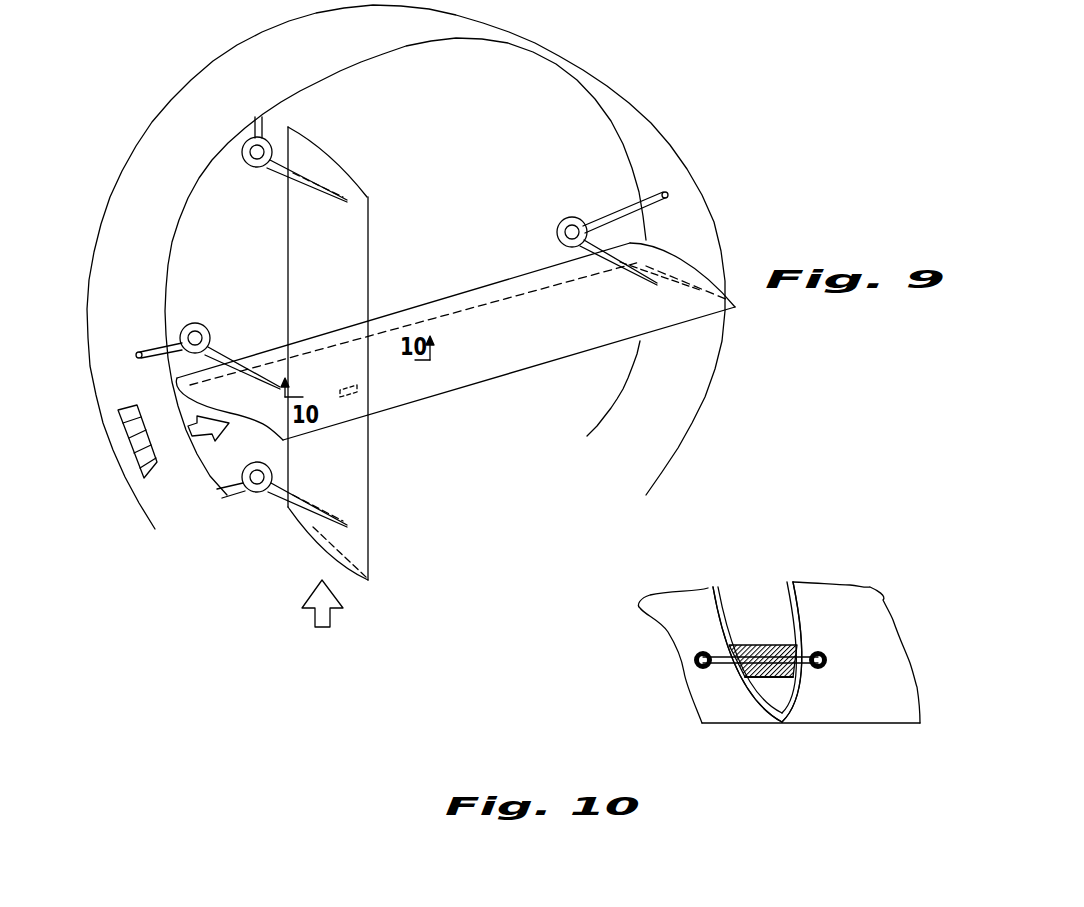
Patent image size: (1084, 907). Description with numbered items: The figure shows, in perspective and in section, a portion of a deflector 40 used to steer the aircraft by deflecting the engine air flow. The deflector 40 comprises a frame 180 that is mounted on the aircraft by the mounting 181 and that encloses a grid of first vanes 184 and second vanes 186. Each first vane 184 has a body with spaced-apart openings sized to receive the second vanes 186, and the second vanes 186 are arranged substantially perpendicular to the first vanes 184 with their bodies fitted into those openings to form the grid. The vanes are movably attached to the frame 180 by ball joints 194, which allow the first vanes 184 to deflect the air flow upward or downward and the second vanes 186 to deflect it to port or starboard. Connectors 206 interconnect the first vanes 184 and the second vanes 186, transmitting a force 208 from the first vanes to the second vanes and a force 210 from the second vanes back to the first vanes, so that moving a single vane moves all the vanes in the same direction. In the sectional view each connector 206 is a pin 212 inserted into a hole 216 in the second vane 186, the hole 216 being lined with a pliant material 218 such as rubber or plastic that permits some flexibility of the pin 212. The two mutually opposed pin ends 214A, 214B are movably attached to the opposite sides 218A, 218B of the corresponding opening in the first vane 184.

In FIG. 9, the deflector 40 is at (585, 40).
In FIG. 9, the frame 180 is at (628, 94).
In FIG. 9, the mounting 181 is at (142, 477).
In FIG. 9, the first vane 184 is at (483, 286).
In FIG. 10, the first vane 184 is at (840, 723).
In FIG. 10, the second vane 186 is at (753, 590).
In FIG. 9, the ball joint 194 is at (248, 165).
In FIG. 9, the connector 206 is at (325, 370).
In FIG. 9, the force 208 is at (342, 608).
In FIG. 9, the force 210 is at (215, 442).
In FIG. 9, the pin 212 is at (343, 403).
In FIG. 10, the pin 212 is at (798, 665).
In FIG. 10, the pin end 214A is at (825, 656).
In FIG. 10, the pin end 214B is at (708, 666).
In FIG. 10, the hole 216 is at (770, 645).
In FIG. 10, the pliant material 218 is at (743, 683).
In FIG. 10, the side of opening 218A is at (803, 623).
In FIG. 10, the side of opening 218B is at (693, 662).